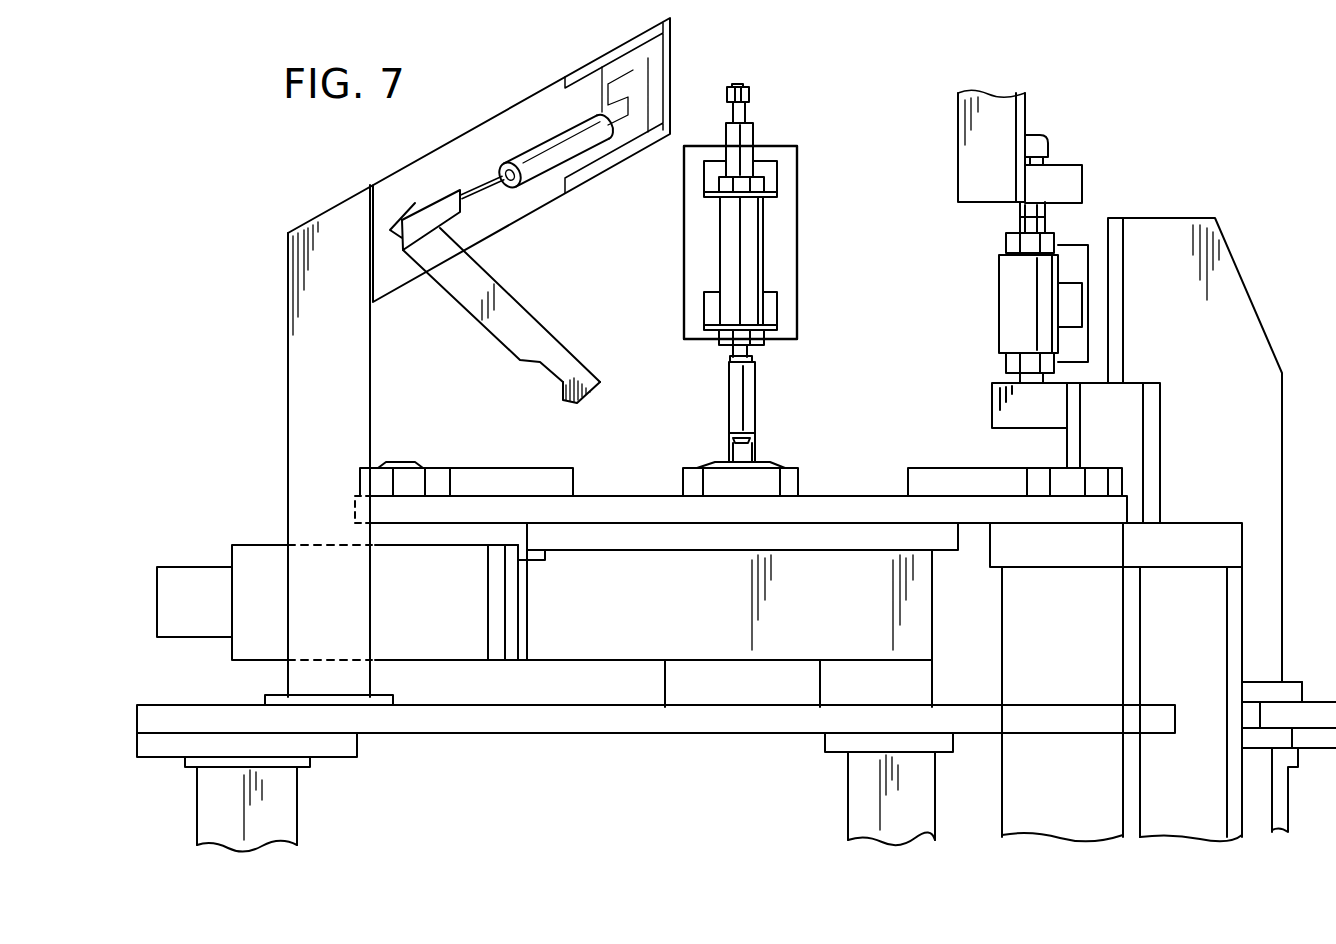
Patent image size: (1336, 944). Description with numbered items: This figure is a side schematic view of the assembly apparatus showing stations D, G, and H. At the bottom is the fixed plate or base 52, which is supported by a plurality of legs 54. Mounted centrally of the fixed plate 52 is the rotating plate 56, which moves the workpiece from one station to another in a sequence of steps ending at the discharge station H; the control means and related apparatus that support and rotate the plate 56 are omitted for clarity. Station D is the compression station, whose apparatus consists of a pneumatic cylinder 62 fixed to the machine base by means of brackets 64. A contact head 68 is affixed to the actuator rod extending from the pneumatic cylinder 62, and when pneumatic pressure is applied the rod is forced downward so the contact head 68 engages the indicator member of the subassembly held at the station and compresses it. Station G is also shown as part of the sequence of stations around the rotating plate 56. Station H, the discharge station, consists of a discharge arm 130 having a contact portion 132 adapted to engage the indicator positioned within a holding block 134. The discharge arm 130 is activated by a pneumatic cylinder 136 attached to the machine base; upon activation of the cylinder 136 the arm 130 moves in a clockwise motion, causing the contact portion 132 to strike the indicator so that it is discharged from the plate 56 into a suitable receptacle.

The fixed plate 52 is at (145, 713).
The legs 54 is at (282, 803).
The rotating plate 56 is at (675, 512).
The pneumatic cylinder 62 is at (726, 246).
The brackets 64 is at (710, 170).
The contact head 68 is at (745, 395).
The discharge arm 130 is at (502, 313).
The contact portion 132 is at (563, 403).
The holding block 134 is at (505, 483).
The pneumatic cylinder 136 is at (542, 155).
The station D is at (739, 290).
The station G is at (994, 327).
The station H is at (400, 455).